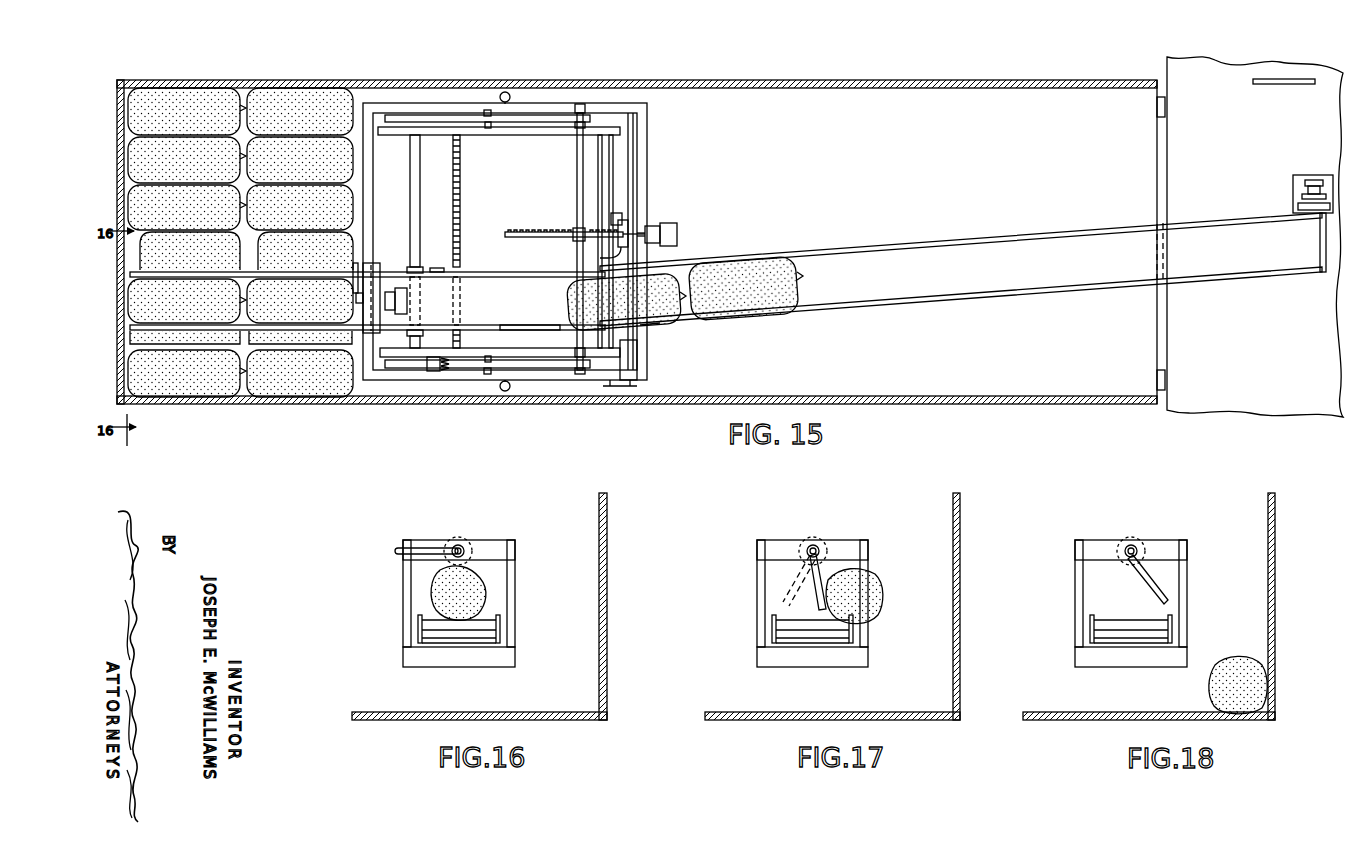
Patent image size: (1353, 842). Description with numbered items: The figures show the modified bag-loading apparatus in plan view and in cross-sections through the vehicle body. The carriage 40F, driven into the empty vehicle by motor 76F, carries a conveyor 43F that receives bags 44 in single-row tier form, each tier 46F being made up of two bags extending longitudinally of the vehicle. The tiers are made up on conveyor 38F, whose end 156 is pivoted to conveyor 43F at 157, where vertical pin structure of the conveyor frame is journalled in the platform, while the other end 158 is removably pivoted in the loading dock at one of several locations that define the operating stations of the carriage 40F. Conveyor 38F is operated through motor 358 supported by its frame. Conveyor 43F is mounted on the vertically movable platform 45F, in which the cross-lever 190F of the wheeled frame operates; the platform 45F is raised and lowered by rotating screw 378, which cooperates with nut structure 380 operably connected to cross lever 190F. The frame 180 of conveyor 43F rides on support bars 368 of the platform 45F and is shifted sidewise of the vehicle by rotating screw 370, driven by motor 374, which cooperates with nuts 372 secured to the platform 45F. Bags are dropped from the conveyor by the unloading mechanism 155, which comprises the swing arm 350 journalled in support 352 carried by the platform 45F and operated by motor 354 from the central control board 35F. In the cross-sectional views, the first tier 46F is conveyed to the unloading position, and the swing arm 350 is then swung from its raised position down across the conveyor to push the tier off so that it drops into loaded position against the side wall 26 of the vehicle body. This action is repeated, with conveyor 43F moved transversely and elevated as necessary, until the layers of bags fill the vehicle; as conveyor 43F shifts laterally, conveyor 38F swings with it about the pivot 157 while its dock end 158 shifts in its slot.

In FIG. 15, the carriage 40F is at (548, 100).
In FIG. 15, the support bars 368 is at (412, 218).
In FIG. 15, the cross-lever 190F is at (577, 178).
In FIG. 15, the screw 370 is at (460, 230).
In FIG. 15, the frame of conveyor 43F 180 is at (437, 270).
In FIG. 15, the vertically movable platform 45F is at (542, 270).
In FIG. 15, the nut structure 380 is at (587, 232).
In FIG. 15, the motor 76F is at (680, 228).
In FIG. 15, the screw 378 is at (620, 258).
In FIG. 15, the tier 46F is at (701, 279).
In FIG. 16, the tier 46F is at (484, 578).
In FIG. 15, the bags 44 is at (770, 297).
In FIG. 15, the conveyor 38F is at (963, 263).
In FIG. 15, the end of conveyor 38F 158 is at (1308, 275).
In FIG. 15, the pivot 157 is at (656, 325).
In FIG. 15, the central control board 35F is at (1285, 79).
In FIG. 15, the motor 358 is at (1326, 175).
In FIG. 15, the swing arm 350 is at (300, 272).
In FIG. 16, the swing arm 350 is at (418, 548).
In FIG. 17, the swing arm 350 is at (800, 590).
In FIG. 18, the swing arm 350 is at (1152, 578).
In FIG. 15, the motor 354 is at (407, 300).
In FIG. 15, the nuts 372 is at (462, 272).
In FIG. 15, the support 352 is at (368, 335).
In FIG. 15, the unloading mechanism 155 is at (250, 320).
In FIG. 16, the unloading mechanism 155 is at (436, 536).
In FIG. 15, the motor 374 is at (437, 372).
In FIG. 15, the conveyor 43F is at (540, 318).
In FIG. 15, the end of conveyor 38F 156 is at (600, 322).
In FIG. 18, the side wall 26 is at (1275, 630).